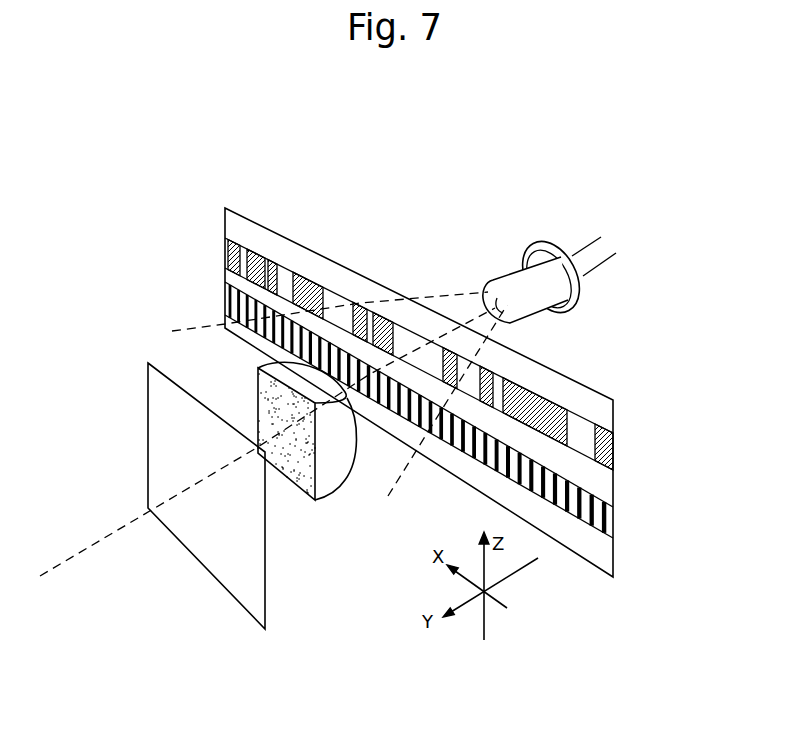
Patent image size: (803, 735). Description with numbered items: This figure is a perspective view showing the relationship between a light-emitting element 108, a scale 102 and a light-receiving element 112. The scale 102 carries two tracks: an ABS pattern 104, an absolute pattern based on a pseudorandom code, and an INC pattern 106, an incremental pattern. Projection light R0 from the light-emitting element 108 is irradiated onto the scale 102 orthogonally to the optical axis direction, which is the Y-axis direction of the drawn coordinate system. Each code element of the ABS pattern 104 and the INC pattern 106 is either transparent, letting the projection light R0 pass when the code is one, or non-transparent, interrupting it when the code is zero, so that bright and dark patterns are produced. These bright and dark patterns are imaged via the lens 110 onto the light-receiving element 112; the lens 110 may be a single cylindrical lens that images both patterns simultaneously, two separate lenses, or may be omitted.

The scale 102 is at (334, 261).
The ABS pattern 104 is at (613, 445).
The INC pattern 106 is at (602, 518).
The light-emitting element 108 is at (571, 306).
The lens 110 is at (328, 467).
The light-receiving element 112 is at (257, 570).
The projection light R0 is at (487, 290).